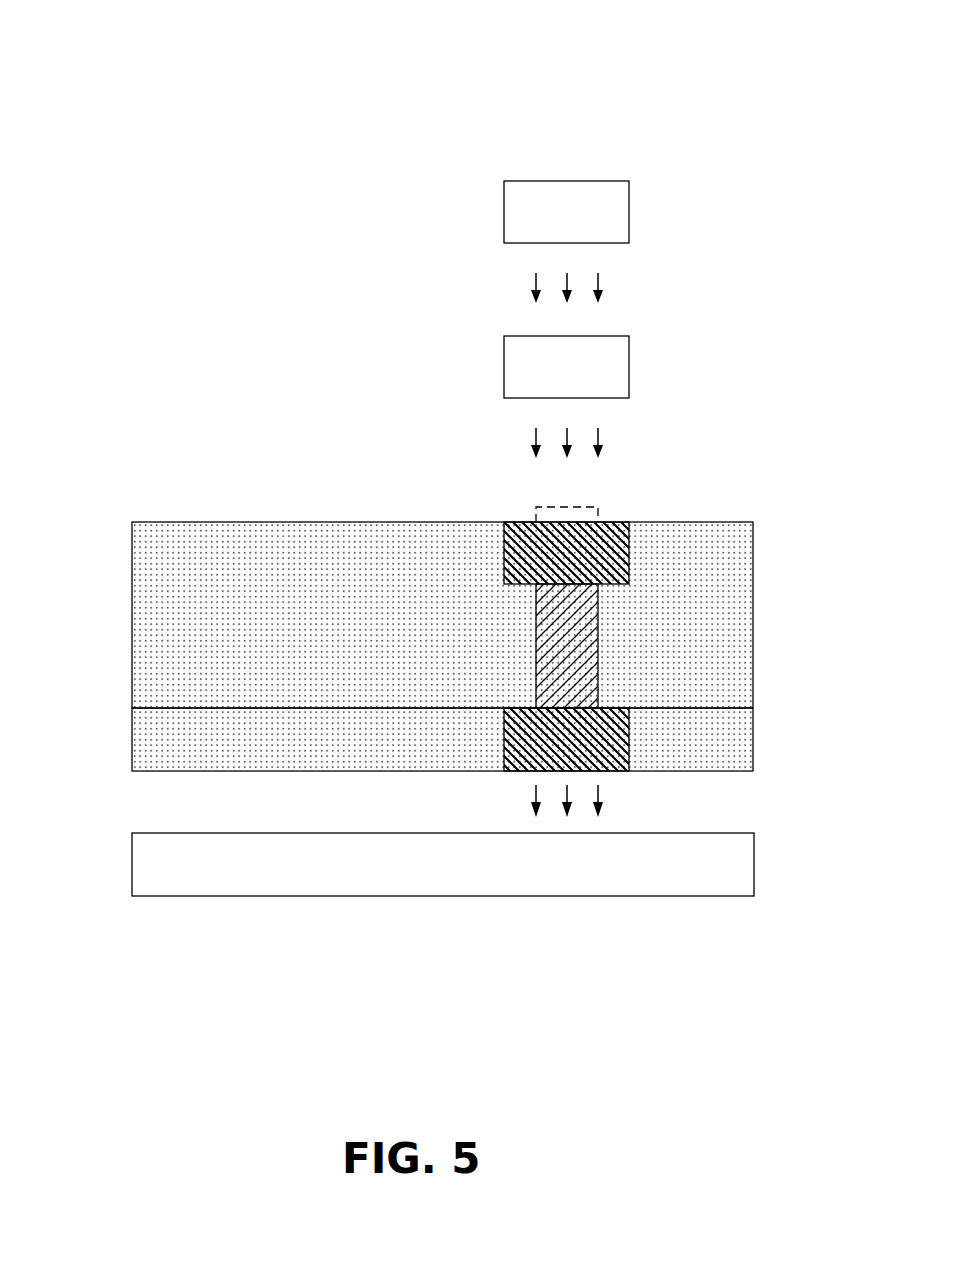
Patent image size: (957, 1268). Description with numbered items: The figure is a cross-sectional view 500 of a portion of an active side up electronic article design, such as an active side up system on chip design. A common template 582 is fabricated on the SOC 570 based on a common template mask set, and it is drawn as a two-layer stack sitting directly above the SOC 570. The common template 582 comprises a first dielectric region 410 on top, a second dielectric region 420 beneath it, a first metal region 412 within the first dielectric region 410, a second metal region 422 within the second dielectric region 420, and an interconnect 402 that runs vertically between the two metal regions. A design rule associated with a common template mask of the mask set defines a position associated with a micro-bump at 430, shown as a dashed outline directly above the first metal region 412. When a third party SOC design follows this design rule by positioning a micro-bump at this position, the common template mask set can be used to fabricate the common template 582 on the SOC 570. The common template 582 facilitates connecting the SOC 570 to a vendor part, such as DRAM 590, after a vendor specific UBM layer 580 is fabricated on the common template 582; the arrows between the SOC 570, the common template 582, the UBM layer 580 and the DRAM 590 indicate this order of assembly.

The cross-sectional view 500 is at (128, 52).
The DRAM 590 is at (629, 212).
The vendor specific UBM layer 580 is at (629, 367).
The common template 582 is at (435, 646).
The first dielectric region 410 is at (730, 615).
The second dielectric region 420 is at (730, 740).
The first metal region 412 is at (612, 522).
The interconnect 402 is at (546, 645).
The second metal region 422 is at (614, 716).
The micro-bump position 430 is at (549, 506).
The SOC 570 is at (738, 848).